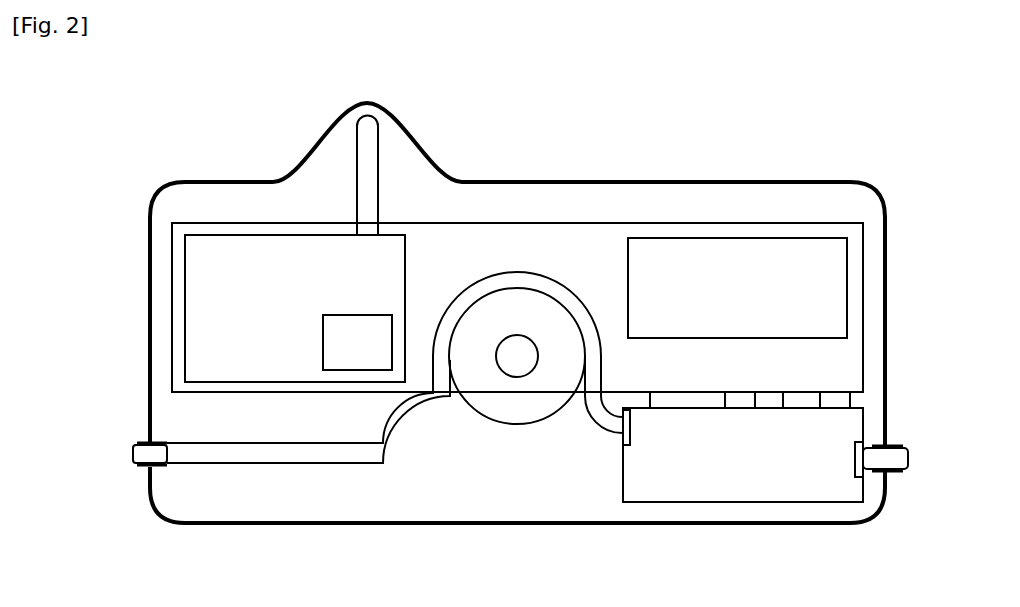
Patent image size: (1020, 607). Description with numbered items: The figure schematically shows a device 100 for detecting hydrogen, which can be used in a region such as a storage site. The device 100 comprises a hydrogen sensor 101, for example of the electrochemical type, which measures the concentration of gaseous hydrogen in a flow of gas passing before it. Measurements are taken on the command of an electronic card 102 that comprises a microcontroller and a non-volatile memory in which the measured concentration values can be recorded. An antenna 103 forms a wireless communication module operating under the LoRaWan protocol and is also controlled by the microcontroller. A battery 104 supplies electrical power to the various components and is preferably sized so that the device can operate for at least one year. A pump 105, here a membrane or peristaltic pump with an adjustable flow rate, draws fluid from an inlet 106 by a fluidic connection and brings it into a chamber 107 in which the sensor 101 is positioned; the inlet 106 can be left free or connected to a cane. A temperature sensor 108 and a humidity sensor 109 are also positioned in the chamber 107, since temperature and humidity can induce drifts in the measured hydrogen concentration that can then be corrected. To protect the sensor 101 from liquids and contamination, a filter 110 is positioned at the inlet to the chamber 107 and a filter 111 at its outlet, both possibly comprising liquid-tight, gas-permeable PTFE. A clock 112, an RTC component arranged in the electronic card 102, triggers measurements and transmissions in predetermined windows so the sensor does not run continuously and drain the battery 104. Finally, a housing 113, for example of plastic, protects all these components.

The device 100 is at (478, 315).
The hydrogen sensor 101 is at (682, 372).
The electronic card 102 is at (295, 308).
The antenna 103 is at (411, 148).
The battery 104 is at (737, 288).
The pump 105 is at (517, 377).
The inlet 106 is at (335, 421).
The chamber 107 is at (743, 455).
The temperature sensor 108 is at (757, 372).
The humidity sensor 109 is at (825, 372).
The filter 110 is at (660, 436).
The filter 111 is at (851, 457).
The clock 112 is at (357, 342).
The housing 113 is at (517, 313).